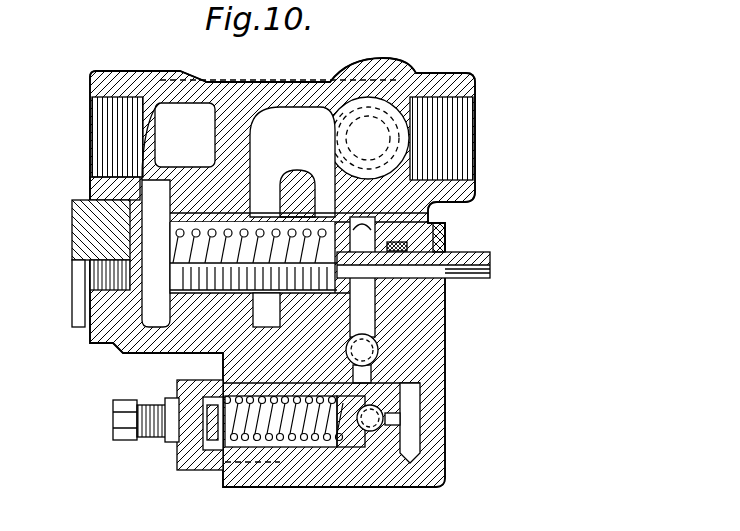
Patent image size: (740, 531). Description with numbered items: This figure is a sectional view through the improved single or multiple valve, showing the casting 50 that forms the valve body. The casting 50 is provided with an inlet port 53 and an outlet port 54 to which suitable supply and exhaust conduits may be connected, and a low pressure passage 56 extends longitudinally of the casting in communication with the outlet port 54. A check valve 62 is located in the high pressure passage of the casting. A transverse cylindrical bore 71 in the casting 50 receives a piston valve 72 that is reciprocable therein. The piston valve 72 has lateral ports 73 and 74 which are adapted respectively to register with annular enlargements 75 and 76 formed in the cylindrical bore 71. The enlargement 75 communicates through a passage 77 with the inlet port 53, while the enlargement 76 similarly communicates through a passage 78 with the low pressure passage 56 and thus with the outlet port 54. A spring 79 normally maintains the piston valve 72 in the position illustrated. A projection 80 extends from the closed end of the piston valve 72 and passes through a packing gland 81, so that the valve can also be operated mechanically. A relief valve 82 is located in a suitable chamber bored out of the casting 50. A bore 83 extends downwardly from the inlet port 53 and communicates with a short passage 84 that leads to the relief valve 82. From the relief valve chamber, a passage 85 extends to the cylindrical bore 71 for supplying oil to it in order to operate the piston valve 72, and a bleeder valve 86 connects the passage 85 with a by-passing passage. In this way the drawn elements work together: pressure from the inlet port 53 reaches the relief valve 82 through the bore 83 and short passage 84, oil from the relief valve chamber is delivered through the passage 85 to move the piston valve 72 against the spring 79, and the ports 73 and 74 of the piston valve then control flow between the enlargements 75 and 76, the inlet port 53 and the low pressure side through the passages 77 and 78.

The casting 50 is at (425, 211).
The inlet port 53 is at (468, 130).
The outlet port 54 is at (108, 124).
The low pressure passage 56 is at (207, 98).
The check valve 62 is at (392, 143).
The transverse cylindrical bore 71 is at (420, 216).
The piston valve 72 is at (205, 205).
The lateral port 73 is at (313, 203).
The lateral port 74 is at (252, 203).
The annular enlargement 75 is at (182, 343).
The annular enlargement 76 is at (87, 307).
The passage 77 is at (293, 103).
The passage 78 is at (100, 190).
The spring 79 is at (83, 227).
The projection 80 is at (490, 261).
The packing gland 81 is at (445, 243).
The relief valve 82 is at (370, 437).
The bore 83 is at (412, 402).
The short passage 84 is at (400, 423).
The passage 85 is at (357, 322).
The bleeder valve 86 is at (370, 355).